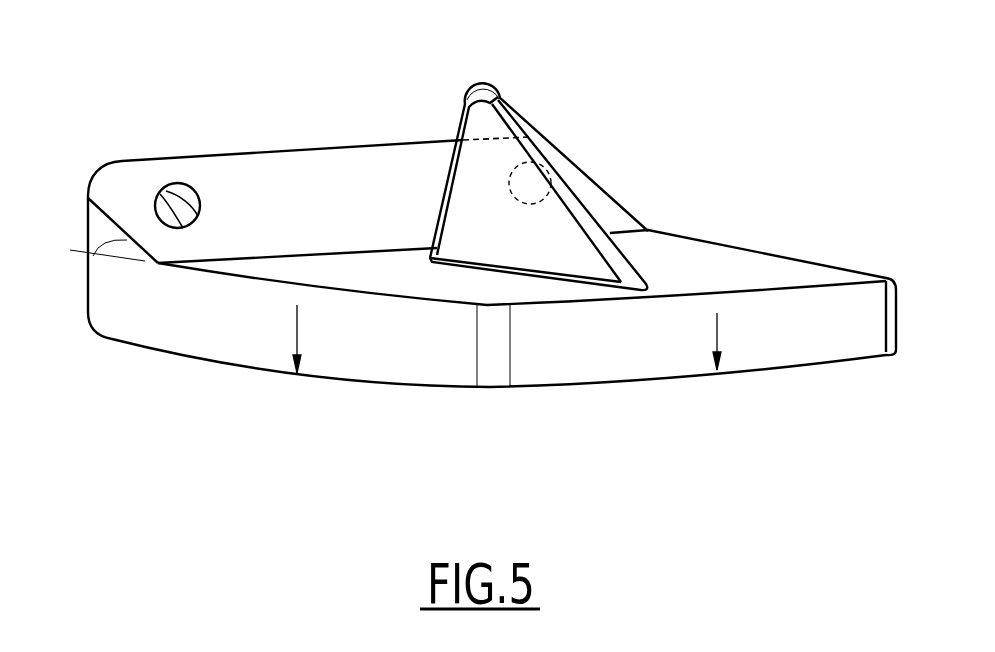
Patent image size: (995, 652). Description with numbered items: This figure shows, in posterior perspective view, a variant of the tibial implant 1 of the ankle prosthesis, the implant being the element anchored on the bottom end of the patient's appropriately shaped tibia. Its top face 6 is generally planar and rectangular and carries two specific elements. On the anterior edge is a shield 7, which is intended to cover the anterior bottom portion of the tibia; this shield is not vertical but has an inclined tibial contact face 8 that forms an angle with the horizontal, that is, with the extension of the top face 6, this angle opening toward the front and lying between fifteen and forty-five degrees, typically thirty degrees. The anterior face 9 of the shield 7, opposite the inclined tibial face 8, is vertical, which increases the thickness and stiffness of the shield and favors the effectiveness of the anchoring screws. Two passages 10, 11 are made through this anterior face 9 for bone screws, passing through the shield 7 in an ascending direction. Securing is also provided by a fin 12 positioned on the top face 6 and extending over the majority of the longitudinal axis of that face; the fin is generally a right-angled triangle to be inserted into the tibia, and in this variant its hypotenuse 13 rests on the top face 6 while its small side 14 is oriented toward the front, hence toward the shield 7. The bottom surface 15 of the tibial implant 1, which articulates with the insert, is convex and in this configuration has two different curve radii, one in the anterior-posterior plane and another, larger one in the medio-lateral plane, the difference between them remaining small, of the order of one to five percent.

The tibial implant 1 is at (460, 233).
The top face 6 is at (680, 267).
The shield 7 is at (302, 140).
The tibial contact face 8 is at (277, 192).
The anterior face 9 is at (103, 232).
The passage 10 is at (188, 186).
The passage 11 is at (573, 172).
The fin 12 is at (493, 152).
The hypotenuse 13 is at (490, 262).
The small side 14 is at (462, 118).
The bottom surface 15 is at (497, 392).